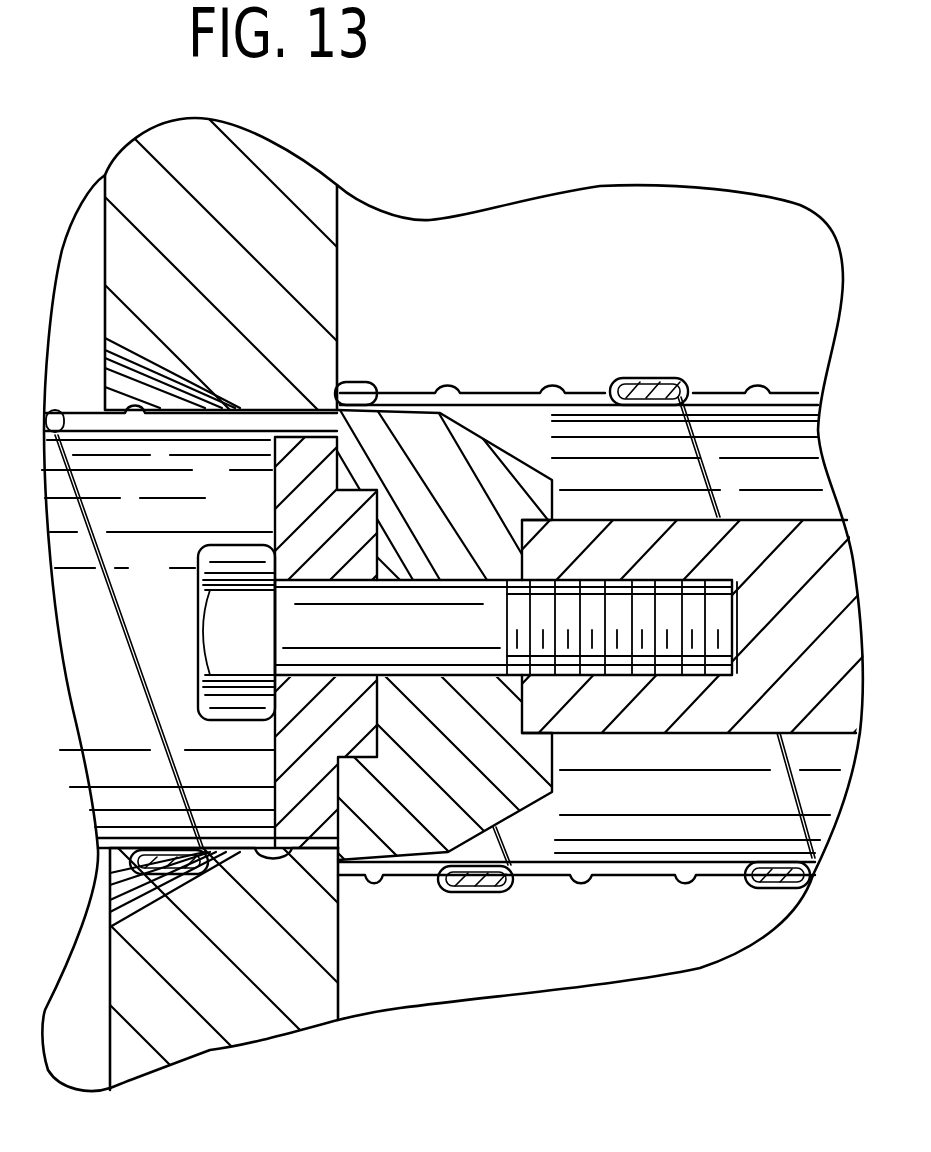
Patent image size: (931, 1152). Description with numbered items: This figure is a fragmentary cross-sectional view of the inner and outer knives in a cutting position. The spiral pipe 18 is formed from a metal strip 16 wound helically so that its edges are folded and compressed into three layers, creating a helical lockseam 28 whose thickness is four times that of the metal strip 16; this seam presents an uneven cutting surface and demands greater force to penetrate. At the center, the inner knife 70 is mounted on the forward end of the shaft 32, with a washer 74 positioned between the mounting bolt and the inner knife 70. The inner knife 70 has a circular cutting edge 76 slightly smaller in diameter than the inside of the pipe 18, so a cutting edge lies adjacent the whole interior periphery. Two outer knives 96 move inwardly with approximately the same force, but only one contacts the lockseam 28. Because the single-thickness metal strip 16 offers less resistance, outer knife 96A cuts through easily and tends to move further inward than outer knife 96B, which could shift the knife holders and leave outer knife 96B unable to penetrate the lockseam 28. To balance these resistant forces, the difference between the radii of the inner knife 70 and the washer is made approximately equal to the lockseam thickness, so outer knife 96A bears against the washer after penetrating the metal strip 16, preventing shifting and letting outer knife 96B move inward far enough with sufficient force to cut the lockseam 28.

The metal strip 16 is at (398, 878).
The spiral pipe 18 is at (505, 392).
The helical lockseam 28 is at (372, 387).
The shaft 32 is at (605, 518).
The inner knife 70 is at (512, 452).
The washer 74 is at (205, 605).
The circular cutting edge 76 is at (277, 499).
The outer knives 96 is at (345, 303).
The outer knife 96A is at (338, 980).
The outer knife 96B is at (338, 352).